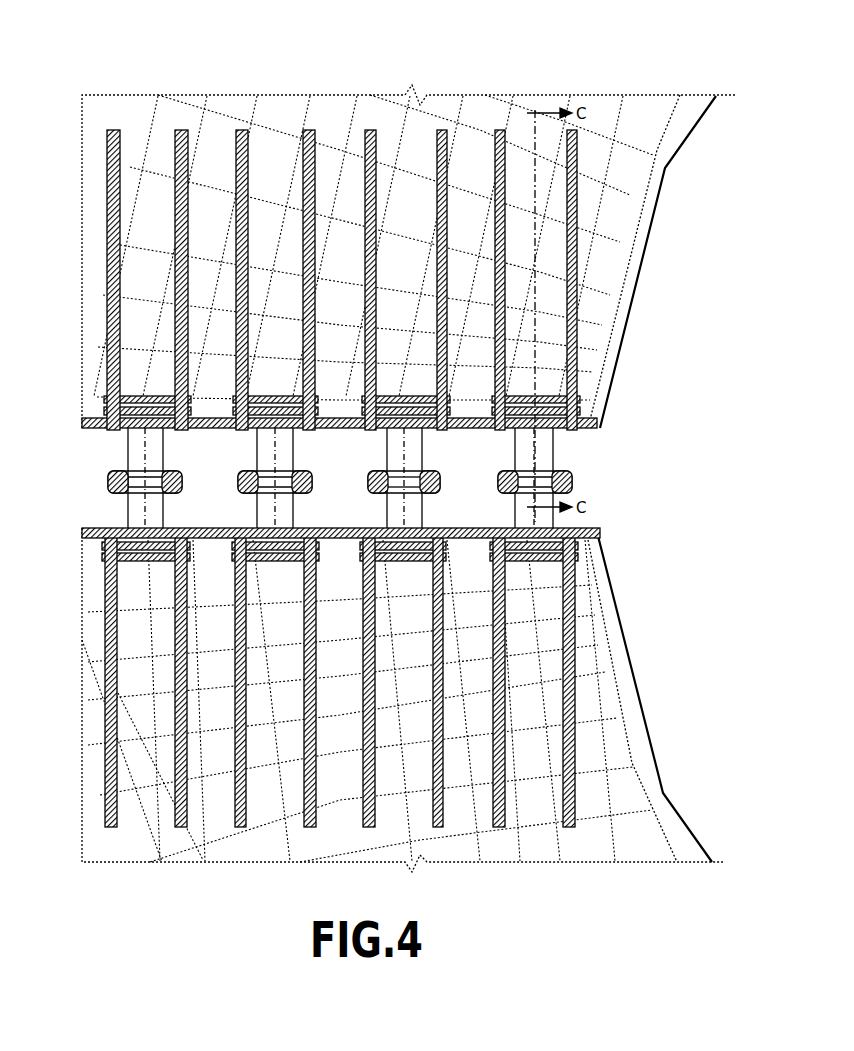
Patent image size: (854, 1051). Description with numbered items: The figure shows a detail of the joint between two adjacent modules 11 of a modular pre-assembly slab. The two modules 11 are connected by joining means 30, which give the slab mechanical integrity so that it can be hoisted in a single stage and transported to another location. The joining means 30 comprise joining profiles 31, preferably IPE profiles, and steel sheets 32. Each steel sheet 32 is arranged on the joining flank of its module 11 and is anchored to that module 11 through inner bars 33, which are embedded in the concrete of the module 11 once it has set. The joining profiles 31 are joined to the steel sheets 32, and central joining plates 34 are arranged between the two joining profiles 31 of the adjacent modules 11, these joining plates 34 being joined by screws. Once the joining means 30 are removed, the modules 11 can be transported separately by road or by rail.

The module 11 is at (110, 127).
The joining means 30 is at (342, 478).
The joining profile 31 is at (555, 458).
The steel sheet 32 is at (84, 536).
The inner bar 33 is at (120, 707).
The central joining plate 34 is at (440, 483).